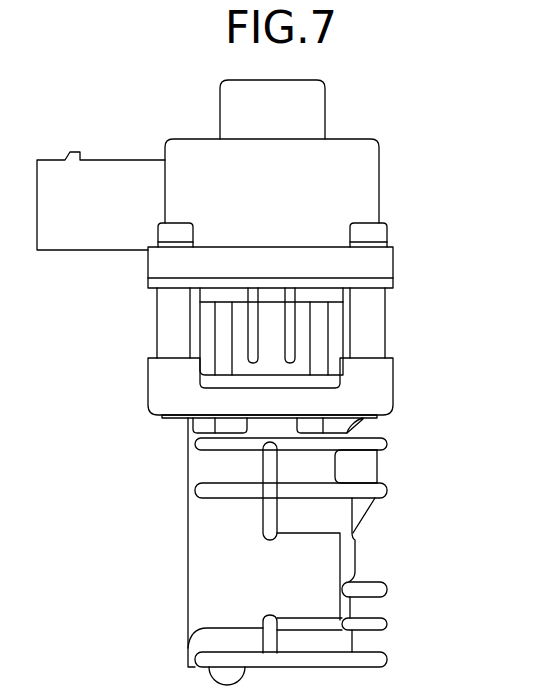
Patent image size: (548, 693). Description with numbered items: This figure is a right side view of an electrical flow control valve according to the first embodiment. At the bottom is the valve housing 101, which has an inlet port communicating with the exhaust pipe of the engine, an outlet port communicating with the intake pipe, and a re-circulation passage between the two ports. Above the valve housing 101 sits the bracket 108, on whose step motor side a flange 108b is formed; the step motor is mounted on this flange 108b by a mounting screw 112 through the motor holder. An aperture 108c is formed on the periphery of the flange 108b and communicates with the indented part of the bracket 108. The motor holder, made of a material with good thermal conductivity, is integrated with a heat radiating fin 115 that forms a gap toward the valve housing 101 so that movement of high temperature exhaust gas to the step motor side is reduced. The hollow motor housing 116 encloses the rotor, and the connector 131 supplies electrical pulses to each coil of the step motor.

The connector 131 is at (130, 168).
The hollow motor housing 116 is at (367, 163).
The mounting screw 112 is at (384, 225).
The heat radiating fin 115 is at (293, 330).
The flange 108b is at (378, 368).
The bracket 108 is at (385, 389).
The aperture 108c is at (387, 432).
The valve housing 101 is at (323, 558).